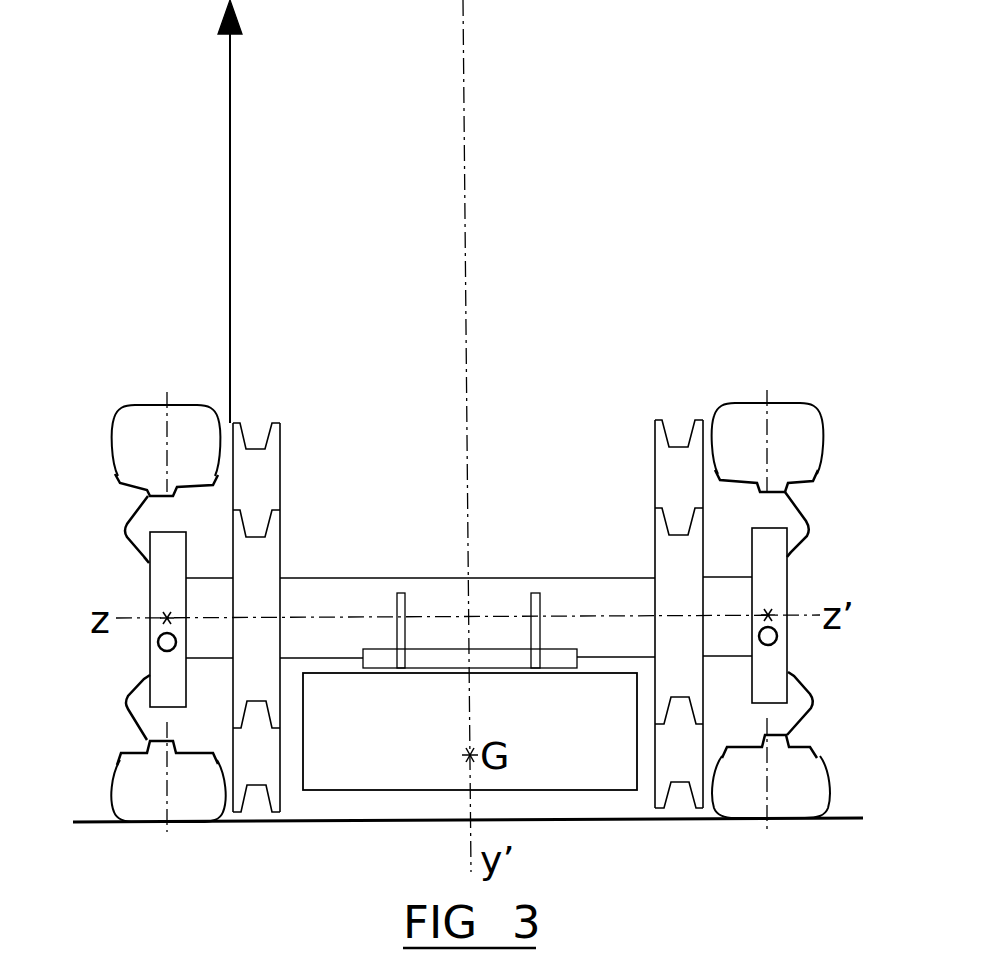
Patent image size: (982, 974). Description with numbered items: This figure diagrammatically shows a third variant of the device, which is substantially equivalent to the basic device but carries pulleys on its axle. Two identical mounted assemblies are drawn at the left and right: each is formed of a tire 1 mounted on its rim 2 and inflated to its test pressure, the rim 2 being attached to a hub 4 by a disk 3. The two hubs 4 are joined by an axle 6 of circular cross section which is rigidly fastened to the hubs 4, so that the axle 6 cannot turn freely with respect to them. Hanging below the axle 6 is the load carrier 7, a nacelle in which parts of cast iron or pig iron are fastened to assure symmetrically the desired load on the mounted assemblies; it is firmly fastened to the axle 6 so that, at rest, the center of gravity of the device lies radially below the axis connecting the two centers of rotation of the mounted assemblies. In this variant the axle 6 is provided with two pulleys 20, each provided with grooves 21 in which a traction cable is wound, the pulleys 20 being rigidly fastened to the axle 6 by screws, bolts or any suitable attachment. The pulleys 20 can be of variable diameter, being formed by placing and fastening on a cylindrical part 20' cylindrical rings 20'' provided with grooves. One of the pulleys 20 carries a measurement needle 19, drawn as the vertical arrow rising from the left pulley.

The tire 1 is at (127, 417).
The rim 2 is at (120, 486).
The disk 3 is at (122, 532).
The hub 4 is at (150, 585).
The axle 6 is at (328, 592).
The load carrier 7 is at (362, 792).
The measurement needle 19 is at (262, 211).
The pulley 20 is at (628, 486).
The cylindrical part 20' is at (312, 491).
The cylindrical ring 20'' is at (316, 420).
The groove 21 is at (270, 410).